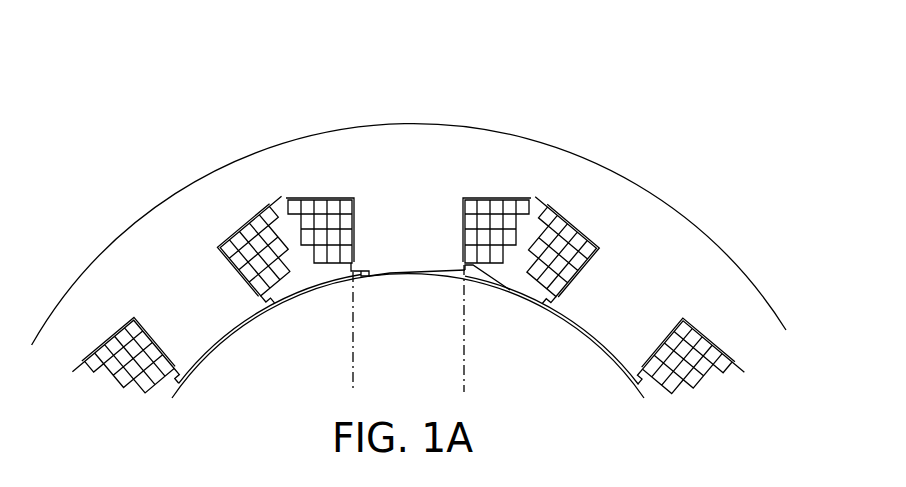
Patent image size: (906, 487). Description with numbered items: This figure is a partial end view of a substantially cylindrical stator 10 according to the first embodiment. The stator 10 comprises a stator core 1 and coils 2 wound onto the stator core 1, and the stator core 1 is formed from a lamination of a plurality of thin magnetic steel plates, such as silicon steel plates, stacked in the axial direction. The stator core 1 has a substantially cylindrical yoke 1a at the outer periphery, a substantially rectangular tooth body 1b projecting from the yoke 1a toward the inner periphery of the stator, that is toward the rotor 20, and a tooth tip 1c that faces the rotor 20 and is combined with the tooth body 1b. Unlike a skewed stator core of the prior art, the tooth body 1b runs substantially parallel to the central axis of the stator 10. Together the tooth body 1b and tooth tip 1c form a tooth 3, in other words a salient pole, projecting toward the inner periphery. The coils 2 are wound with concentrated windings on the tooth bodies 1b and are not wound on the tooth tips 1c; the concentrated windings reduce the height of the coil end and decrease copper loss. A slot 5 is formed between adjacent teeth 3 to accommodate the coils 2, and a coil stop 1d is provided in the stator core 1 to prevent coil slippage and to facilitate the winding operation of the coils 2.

The stator 10 is at (520, 113).
The stator core 1 is at (409, 222).
The yoke 1a is at (238, 210).
The tooth body 1b is at (382, 242).
The tooth tip 1c is at (412, 275).
The coil stop 1d is at (496, 294).
The coil 2 is at (528, 202).
The tooth 3 is at (396, 226).
The slot 5 is at (287, 208).
The rotor 20 is at (263, 396).